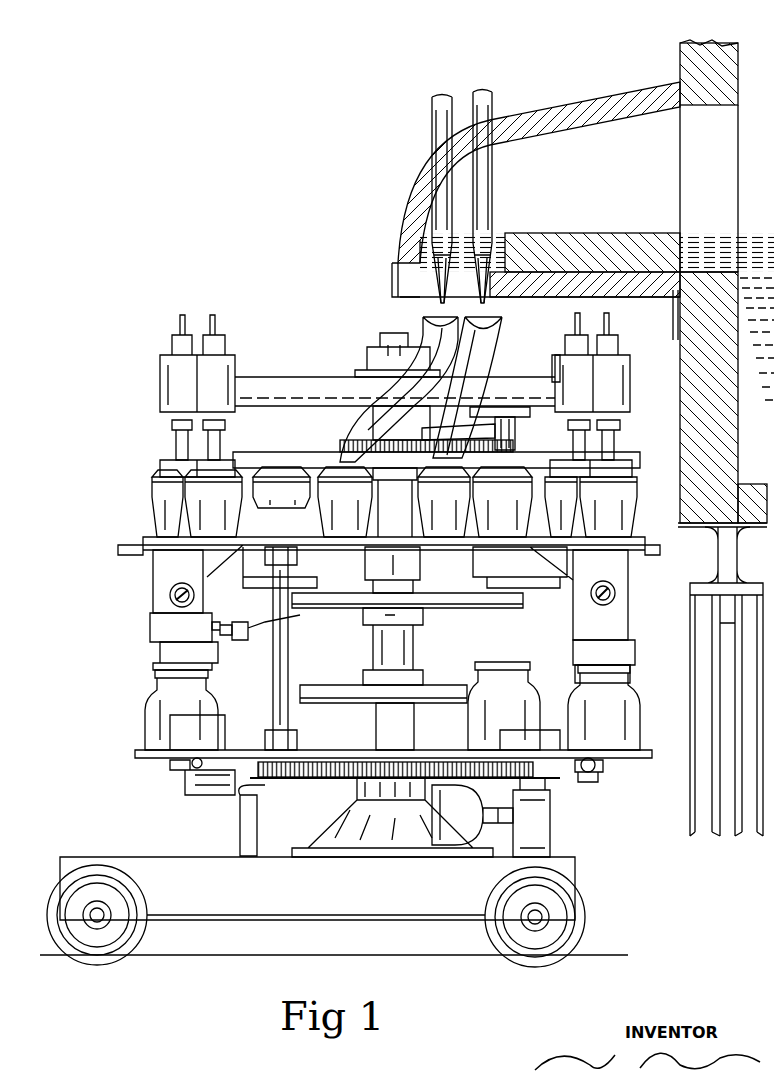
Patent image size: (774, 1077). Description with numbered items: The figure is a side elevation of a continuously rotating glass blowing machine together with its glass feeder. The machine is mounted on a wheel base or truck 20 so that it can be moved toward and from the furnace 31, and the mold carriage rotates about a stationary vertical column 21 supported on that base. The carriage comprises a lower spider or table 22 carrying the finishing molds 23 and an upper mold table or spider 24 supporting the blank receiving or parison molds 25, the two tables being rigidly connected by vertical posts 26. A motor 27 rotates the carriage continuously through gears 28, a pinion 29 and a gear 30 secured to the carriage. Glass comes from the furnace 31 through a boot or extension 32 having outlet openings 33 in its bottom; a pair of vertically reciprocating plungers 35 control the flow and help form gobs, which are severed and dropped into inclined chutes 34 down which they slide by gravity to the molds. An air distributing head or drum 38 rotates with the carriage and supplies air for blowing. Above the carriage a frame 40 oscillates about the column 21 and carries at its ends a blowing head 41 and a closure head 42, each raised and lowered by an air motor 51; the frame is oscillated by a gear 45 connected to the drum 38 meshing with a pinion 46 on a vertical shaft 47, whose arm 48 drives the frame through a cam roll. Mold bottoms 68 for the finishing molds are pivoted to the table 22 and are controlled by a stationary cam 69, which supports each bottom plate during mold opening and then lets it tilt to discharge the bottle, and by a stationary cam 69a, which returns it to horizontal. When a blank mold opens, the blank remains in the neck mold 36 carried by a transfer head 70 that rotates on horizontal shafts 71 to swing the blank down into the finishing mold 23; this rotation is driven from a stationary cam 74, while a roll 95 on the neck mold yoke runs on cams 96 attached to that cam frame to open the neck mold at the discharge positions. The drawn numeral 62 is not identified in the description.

The wheel base or truck 20 is at (158, 857).
The stationary vertical column 21 is at (385, 340).
The lower spider or table 22 is at (145, 760).
The finishing molds 23 is at (160, 698).
The upper mold table or spider 24 is at (143, 540).
The blank receiving or parison molds 25 is at (150, 490).
The vertical posts 26 is at (290, 660).
The motor 27 is at (455, 818).
The gears 28 is at (552, 820).
The pinion 29 is at (540, 778).
The gear 30 is at (306, 778).
The furnace 31 is at (680, 400).
The boot or extension 32 is at (400, 236).
The outlet openings 33 is at (440, 300).
The inclined chutes 34 is at (352, 395).
The vertically reciprocating plungers 35 is at (440, 190).
The neck mold 36 is at (165, 652).
The air distributing head or drum 38 is at (265, 454).
The frame 40 is at (276, 380).
The blowing head 41 is at (225, 462).
The head 42 is at (170, 465).
The gear 45 is at (320, 440).
The pinion 46 is at (540, 436).
The vertical shaft 47 is at (470, 410).
The arm 48 is at (552, 380).
The air motor 51 is at (165, 370).
The lower disc 62 is at (440, 686).
The mold bottoms 68 is at (598, 775).
The stationary cam 69 is at (205, 792).
The stationary cam 69a is at (240, 800).
The transfer head 70 is at (160, 625).
The horizontal shafts 71 is at (170, 595).
The stationary cam 74 is at (340, 593).
The roll 95 is at (228, 625).
The cams 96 is at (243, 640).